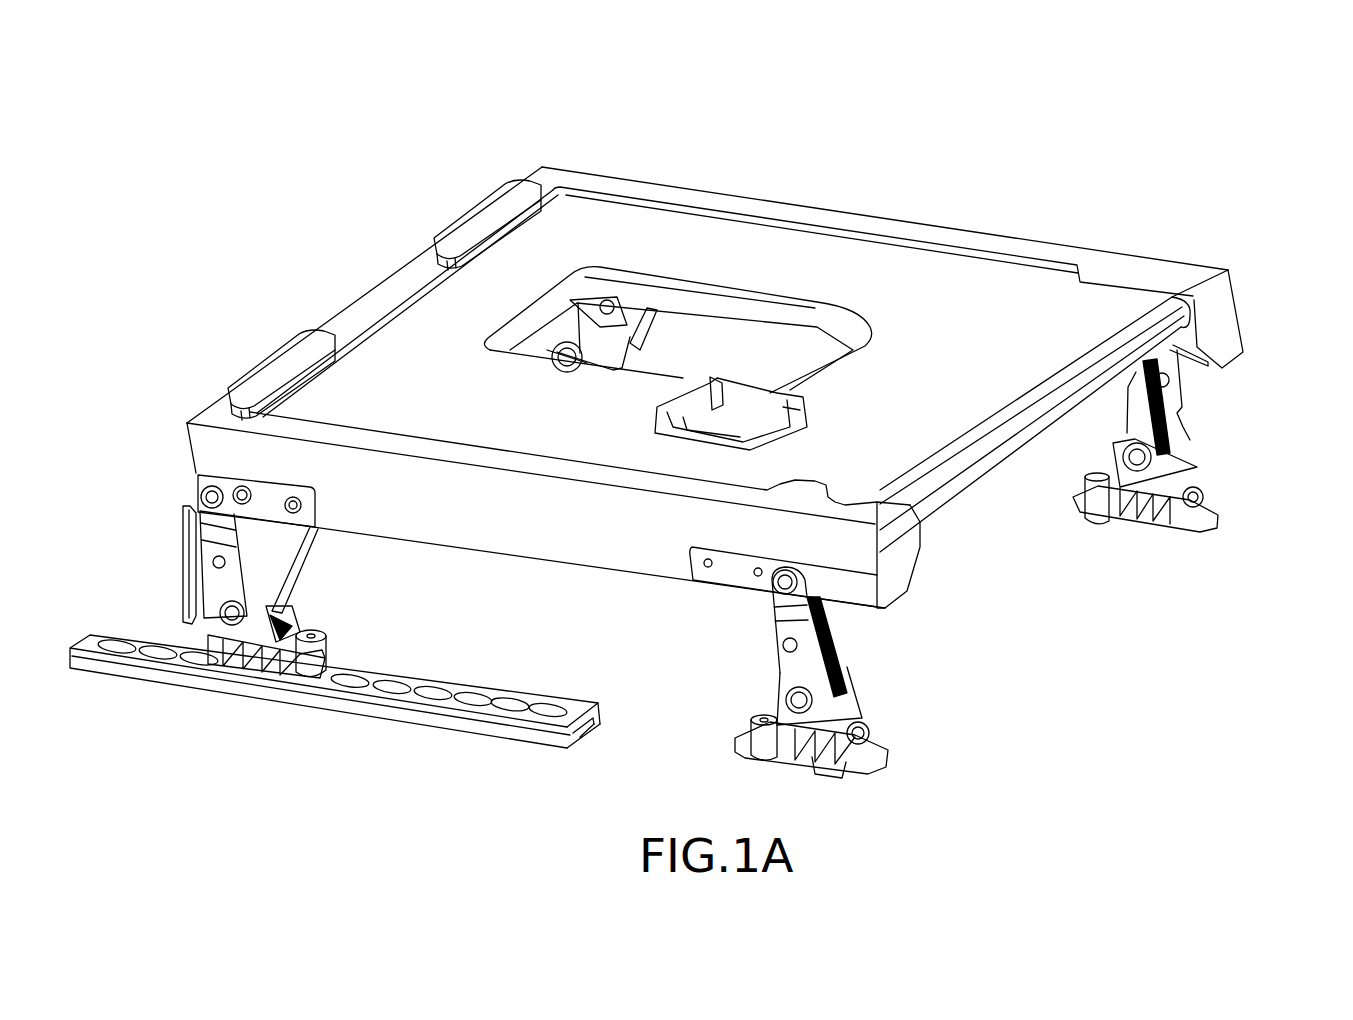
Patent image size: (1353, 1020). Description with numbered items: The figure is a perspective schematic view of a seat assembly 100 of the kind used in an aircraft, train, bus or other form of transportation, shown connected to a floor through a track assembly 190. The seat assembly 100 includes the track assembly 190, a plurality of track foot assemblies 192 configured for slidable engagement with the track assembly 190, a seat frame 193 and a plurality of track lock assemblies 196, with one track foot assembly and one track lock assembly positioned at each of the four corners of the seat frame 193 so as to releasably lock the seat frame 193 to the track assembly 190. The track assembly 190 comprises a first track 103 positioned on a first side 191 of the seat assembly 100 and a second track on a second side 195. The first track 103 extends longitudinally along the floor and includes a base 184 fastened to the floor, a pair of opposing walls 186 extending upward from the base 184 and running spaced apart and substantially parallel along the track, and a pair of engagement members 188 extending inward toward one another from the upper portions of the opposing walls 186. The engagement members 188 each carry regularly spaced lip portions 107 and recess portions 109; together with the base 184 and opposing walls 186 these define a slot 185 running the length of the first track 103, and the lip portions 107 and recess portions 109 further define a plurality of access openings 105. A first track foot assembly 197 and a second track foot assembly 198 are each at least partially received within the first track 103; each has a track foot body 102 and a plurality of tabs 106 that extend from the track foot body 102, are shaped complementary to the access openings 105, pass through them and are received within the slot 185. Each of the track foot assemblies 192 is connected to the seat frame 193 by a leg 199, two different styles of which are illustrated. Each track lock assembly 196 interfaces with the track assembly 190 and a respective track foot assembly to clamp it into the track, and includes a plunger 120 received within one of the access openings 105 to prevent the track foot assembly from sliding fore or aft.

The seat assembly 100 is at (1112, 122).
The track foot body 102 is at (874, 756).
The first track 103 is at (420, 718).
The access openings 105 is at (178, 655).
The tabs 106 is at (824, 765).
The lip portions 107 is at (450, 688).
The recess portions 109 is at (477, 690).
The plunger 120 is at (306, 664).
The base 184 is at (573, 738).
The slot 185 is at (122, 648).
The opposing walls 186 is at (598, 717).
The engagement members 188 is at (532, 697).
The track assembly 190 is at (304, 734).
The first side 191 is at (186, 427).
The track foot assemblies 192 is at (1248, 525).
The seat frame 193 is at (390, 289).
The second side 195 is at (542, 165).
The track lock assemblies 196 is at (356, 638).
The first track foot assembly 197 is at (315, 615).
The second track foot assembly 198 is at (890, 723).
The leg 199 is at (830, 646).